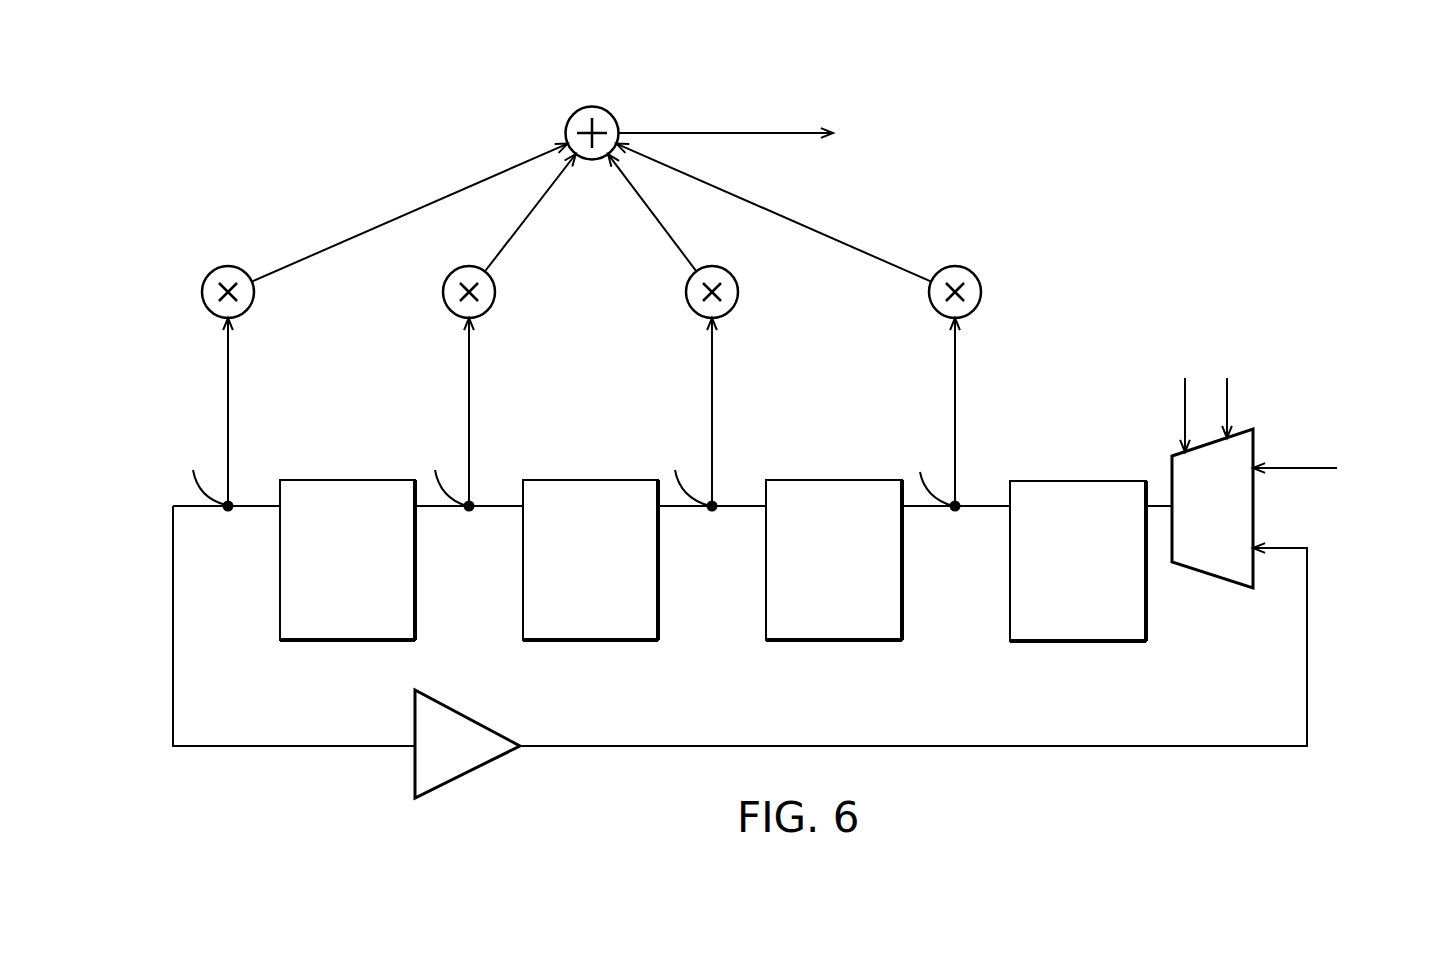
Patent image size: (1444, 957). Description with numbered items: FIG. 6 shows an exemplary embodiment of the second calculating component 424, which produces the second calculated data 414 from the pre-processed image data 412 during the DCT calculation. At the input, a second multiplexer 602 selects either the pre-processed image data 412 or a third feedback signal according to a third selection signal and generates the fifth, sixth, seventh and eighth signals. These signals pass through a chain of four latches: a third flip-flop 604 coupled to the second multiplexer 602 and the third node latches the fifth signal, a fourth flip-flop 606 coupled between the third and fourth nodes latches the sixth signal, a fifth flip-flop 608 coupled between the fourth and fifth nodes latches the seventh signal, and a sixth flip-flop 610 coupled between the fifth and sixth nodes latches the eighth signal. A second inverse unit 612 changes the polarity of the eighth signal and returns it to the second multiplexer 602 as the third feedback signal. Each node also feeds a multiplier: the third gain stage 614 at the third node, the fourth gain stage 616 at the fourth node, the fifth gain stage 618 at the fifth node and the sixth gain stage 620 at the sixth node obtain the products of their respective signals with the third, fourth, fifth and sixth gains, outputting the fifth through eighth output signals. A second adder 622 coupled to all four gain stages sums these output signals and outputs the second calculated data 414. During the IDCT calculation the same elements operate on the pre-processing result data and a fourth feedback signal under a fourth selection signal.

The second calculating component 424 is at (1198, 188).
The second multiplexer 602 is at (1210, 577).
The third flip-flop 604 is at (1037, 482).
The fourth flip-flop 606 is at (793, 480).
The fifth flip-flop 608 is at (550, 480).
The sixth flip-flop 610 is at (307, 480).
The second inverse unit 612 is at (470, 716).
The third gain stage 614 is at (979, 292).
The fourth gain stage 616 is at (736, 292).
The fifth gain stage 618 is at (493, 292).
The sixth gain stage 620 is at (205, 292).
The second adder 622 is at (592, 119).
The second calculated data 414 is at (780, 135).
The pre-processed image data 412 is at (1347, 470).